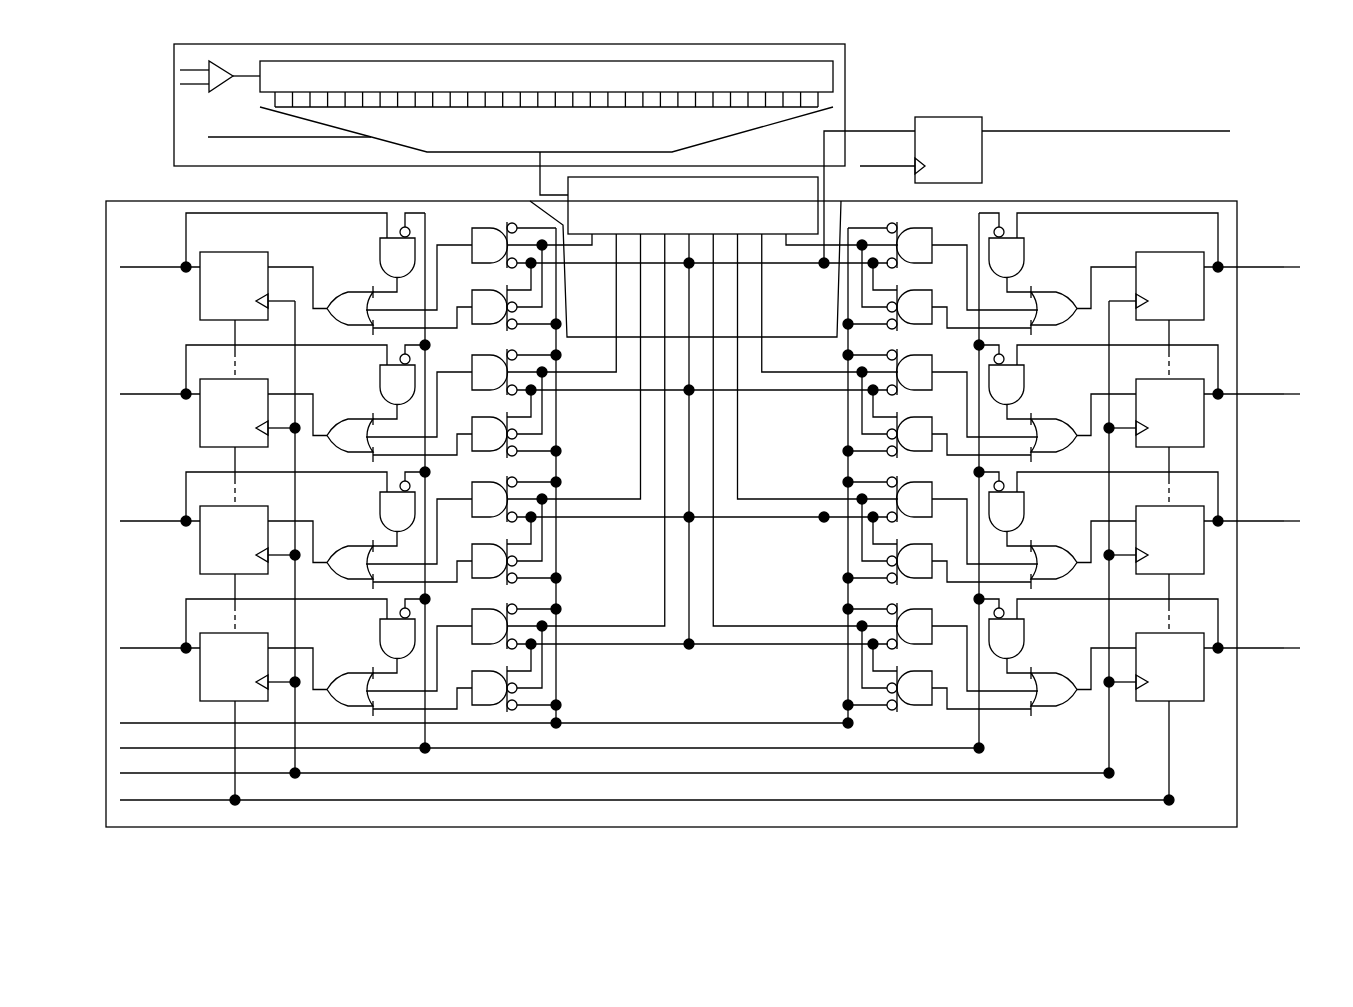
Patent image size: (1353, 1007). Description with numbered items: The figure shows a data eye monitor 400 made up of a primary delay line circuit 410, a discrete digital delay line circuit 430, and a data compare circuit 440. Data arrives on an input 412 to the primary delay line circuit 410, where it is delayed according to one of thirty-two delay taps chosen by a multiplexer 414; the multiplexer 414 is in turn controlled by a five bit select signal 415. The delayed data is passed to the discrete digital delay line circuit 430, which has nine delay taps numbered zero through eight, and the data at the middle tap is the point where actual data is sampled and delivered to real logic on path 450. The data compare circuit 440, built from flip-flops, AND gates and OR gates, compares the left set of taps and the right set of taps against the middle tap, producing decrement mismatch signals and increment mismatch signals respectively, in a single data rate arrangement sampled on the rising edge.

The data eye monitor 400 is at (1229, 34).
The primary delay line circuit 410 is at (847, 80).
The input 412 is at (242, 73).
The multiplexer 414 is at (815, 126).
The select signal 415 is at (310, 137).
The discrete digital delay line circuit 430 is at (807, 202).
The data compare circuit 440 is at (1125, 202).
The path 450 is at (1057, 131).